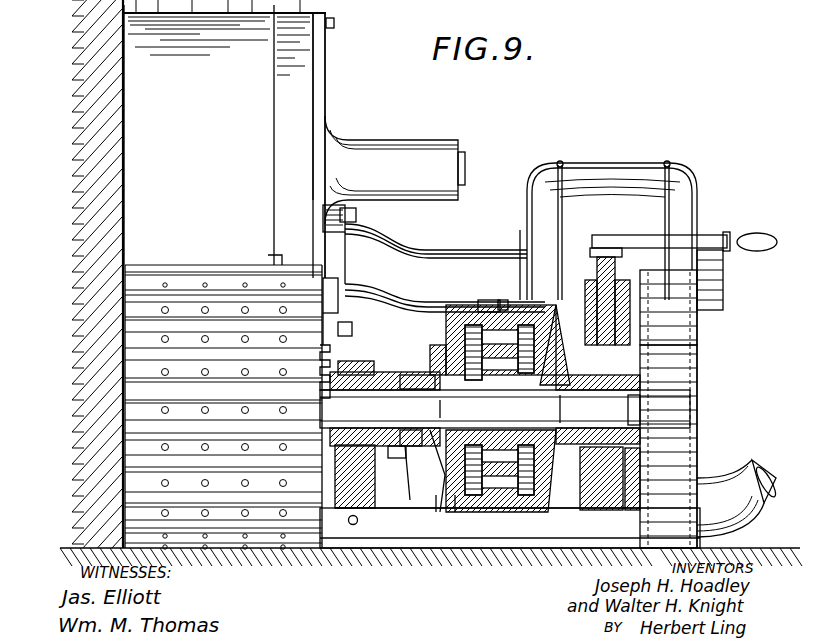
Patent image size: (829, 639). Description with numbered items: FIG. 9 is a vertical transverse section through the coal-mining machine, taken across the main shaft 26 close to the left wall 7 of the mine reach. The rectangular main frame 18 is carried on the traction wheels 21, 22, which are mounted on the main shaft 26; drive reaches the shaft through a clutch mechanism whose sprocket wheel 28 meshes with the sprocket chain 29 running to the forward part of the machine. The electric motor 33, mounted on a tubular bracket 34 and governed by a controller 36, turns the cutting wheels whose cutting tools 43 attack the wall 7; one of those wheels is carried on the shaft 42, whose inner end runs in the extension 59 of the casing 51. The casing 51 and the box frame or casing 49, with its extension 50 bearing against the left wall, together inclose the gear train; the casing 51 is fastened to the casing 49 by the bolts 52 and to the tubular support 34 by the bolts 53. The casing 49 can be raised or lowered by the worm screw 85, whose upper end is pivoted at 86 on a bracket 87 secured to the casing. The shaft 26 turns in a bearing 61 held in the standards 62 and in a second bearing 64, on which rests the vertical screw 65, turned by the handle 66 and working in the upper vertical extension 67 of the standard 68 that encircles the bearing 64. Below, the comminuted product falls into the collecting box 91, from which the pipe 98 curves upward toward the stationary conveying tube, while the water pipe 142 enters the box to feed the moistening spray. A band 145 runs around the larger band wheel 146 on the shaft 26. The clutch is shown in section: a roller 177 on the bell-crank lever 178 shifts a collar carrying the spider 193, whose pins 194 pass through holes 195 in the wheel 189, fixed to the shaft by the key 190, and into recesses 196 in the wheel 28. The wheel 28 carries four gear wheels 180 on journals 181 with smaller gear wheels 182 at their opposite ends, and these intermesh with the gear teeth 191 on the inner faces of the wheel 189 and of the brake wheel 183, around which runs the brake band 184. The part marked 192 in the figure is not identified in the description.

The left wall 7 is at (96, 215).
The main frame 18 is at (600, 510).
The traction wheel 21 is at (297, 527).
The traction wheel 22 is at (682, 432).
The main shaft 26 is at (325, 403).
The sprocket wheel 28 is at (501, 322).
The sprocket chain 29 is at (500, 520).
The electric motor 33 is at (622, 170).
The tubular bracket 34 is at (445, 268).
The controller 36 is at (700, 366).
The shaft 42 is at (466, 164).
The cutting tools 43 is at (232, 5).
The box frame or casing 49 is at (297, 88).
The extension 50 is at (225, 139).
The casing 51 is at (320, 110).
The bolts 52 is at (334, 24).
The bolts 53 is at (358, 214).
The extension 59 is at (391, 170).
The bearing 61 is at (378, 388).
The standards 62 is at (356, 355).
The bearing 64 is at (640, 402).
The vertical screw 65 is at (597, 260).
The handle 66 is at (742, 238).
The upper vertical extension 67 is at (612, 262).
The standard 68 is at (601, 478).
The worm screw 85 is at (320, 348).
The pivot 86 is at (346, 330).
The bracket 87 is at (330, 283).
The collecting box 91 is at (375, 510).
The pipe 98 is at (740, 482).
The pipe 142 is at (354, 525).
The band 145 is at (612, 342).
The band wheel 146 is at (569, 409).
The roller 177 is at (409, 465).
The bell-crank lever 178 is at (395, 450).
The gear wheels 180 is at (456, 375).
The journals 181 is at (506, 374).
The smaller gear wheels 182 is at (505, 362).
The brake wheel 183 is at (536, 502).
The band 184 is at (525, 512).
The wheel 189 is at (448, 472).
The key 190 is at (449, 410).
The gear teeth 191 is at (540, 345).
The support 192 is at (455, 512).
The spider 193 is at (433, 352).
The pins 194 is at (450, 518).
The holes 195 is at (482, 305).
The recesses 196 is at (490, 300).